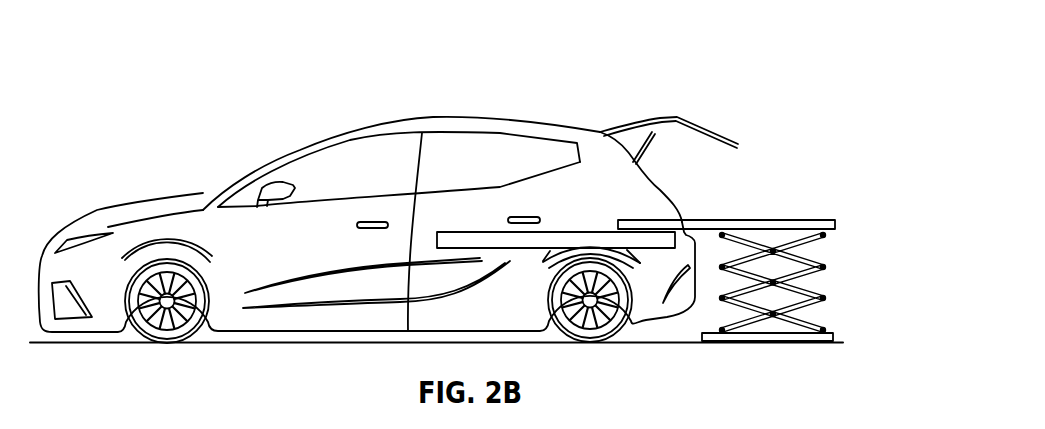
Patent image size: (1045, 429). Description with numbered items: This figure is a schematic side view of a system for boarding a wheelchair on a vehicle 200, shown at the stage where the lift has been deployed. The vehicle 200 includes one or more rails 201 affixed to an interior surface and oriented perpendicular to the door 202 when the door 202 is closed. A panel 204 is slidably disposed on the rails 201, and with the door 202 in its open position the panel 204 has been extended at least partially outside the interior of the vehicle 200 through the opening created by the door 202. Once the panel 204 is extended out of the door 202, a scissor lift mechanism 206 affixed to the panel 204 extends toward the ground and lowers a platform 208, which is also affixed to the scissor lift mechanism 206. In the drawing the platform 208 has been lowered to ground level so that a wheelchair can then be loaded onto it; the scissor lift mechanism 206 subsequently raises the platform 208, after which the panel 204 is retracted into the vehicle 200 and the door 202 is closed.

The vehicle 200 is at (190, 190).
The rails 201 is at (587, 232).
The door 202 is at (708, 128).
The panel 204 is at (823, 220).
The scissor lift mechanism 206 is at (827, 300).
The platform 208 is at (835, 338).